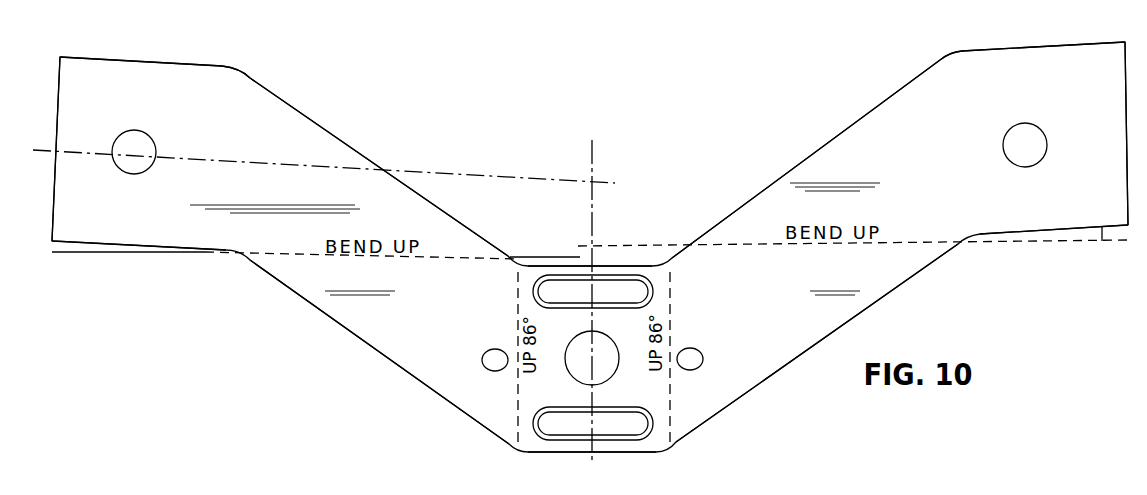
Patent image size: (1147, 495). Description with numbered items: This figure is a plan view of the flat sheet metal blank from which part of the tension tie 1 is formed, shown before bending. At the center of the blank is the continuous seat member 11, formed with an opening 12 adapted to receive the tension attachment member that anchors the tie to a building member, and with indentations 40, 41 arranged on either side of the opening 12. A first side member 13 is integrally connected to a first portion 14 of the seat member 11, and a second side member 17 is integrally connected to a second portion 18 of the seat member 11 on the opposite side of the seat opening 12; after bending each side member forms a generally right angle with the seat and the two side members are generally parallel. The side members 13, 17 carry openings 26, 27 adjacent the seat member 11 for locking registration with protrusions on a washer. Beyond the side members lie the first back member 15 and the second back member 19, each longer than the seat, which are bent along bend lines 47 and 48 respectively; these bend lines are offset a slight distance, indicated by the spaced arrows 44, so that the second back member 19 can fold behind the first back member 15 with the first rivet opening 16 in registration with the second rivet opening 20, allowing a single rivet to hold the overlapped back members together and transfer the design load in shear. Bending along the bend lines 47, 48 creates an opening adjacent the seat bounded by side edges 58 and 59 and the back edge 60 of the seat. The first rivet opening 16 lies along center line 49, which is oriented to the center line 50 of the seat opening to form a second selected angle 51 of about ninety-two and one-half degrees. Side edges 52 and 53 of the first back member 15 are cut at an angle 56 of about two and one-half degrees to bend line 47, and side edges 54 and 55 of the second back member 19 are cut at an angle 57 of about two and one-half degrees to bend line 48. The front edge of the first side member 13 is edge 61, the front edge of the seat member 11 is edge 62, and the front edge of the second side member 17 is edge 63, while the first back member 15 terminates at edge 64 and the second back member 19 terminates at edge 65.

The tension tie 1 is at (888, 309).
The seat member 11 is at (661, 440).
The opening 12 is at (576, 371).
The first side member 13 is at (400, 328).
The first portion of the seat member 14 is at (518, 290).
The first back member 15 is at (236, 62).
The first rivet opening 16 is at (142, 146).
The second side member 17 is at (748, 318).
The second portion of the seat member 18 is at (670, 303).
The second back member 19 is at (896, 78).
The second rivet opening 20 is at (1033, 133).
The opening 26 is at (486, 355).
The opening 27 is at (693, 353).
The indentation 40 is at (615, 435).
The indentation 41 is at (632, 290).
The spaced arrows 44 is at (572, 257).
The bend line 47 is at (462, 258).
The bend line 48 is at (918, 245).
The center line 49 is at (218, 156).
The center line of the seat opening 50 is at (595, 397).
The second selected angle 51 is at (585, 215).
The side edge 52 is at (140, 252).
The side edge 53 is at (128, 60).
The side edge 54 is at (1102, 232).
The side edge 55 is at (1027, 48).
The angle 56 is at (67, 222).
The angle 57 is at (1112, 212).
The side edge 58 is at (368, 157).
The side edge 59 is at (855, 125).
The back edge of the seat 60 is at (617, 265).
The front edge of first side member 61 is at (413, 377).
The front edge of seat member 62 is at (545, 455).
The front edge of second side member 63 is at (790, 364).
The edge 64 is at (52, 75).
The edge 65 is at (1130, 58).